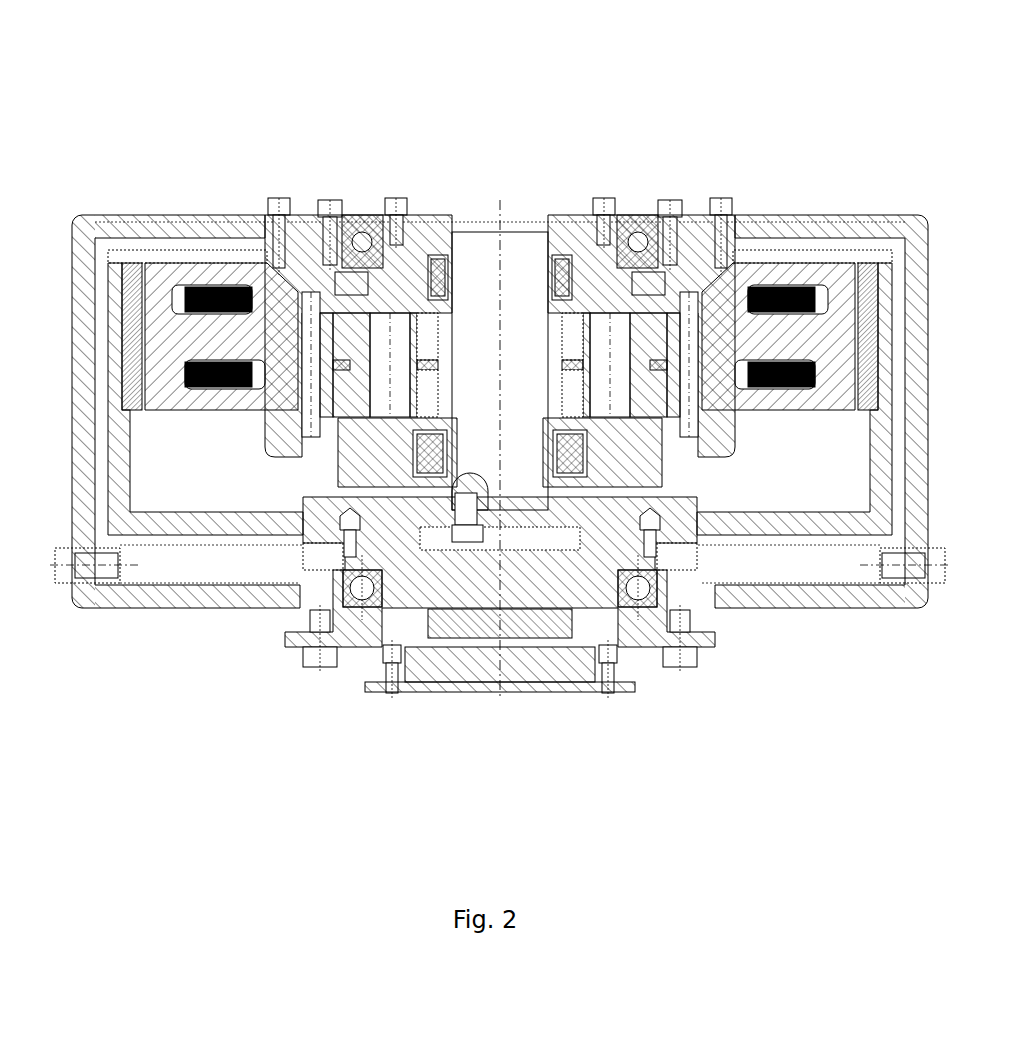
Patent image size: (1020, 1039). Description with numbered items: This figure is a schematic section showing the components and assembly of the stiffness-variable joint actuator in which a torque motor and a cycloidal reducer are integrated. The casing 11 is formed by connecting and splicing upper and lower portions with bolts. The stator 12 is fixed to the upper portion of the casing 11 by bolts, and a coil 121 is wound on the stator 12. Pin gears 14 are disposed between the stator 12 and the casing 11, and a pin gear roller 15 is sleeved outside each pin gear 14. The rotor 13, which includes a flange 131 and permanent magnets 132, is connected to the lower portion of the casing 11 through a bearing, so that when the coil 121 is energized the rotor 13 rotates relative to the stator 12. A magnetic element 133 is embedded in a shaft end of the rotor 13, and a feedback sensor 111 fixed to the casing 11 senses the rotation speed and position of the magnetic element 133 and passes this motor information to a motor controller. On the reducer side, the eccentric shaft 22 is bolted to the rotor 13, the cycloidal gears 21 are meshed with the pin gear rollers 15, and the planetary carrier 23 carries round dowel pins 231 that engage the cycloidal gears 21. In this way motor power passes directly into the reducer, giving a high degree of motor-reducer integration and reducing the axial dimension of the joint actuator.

The casing 11 is at (118, 228).
The stator 12 is at (787, 439).
The coil 121 is at (783, 390).
The rotor 13 is at (308, 525).
The flange 131 is at (122, 450).
The permanent magnet 132 is at (133, 347).
The magnetic element 133 is at (468, 622).
The feedback sensor 111 is at (543, 663).
The pin gear 14 is at (307, 303).
The pin gear roller 15 is at (322, 323).
The cycloidal gear 21 is at (352, 338).
The eccentric shaft 22 is at (525, 270).
The planetary carrier 23 is at (610, 365).
The round dowel pin 231 is at (612, 258).